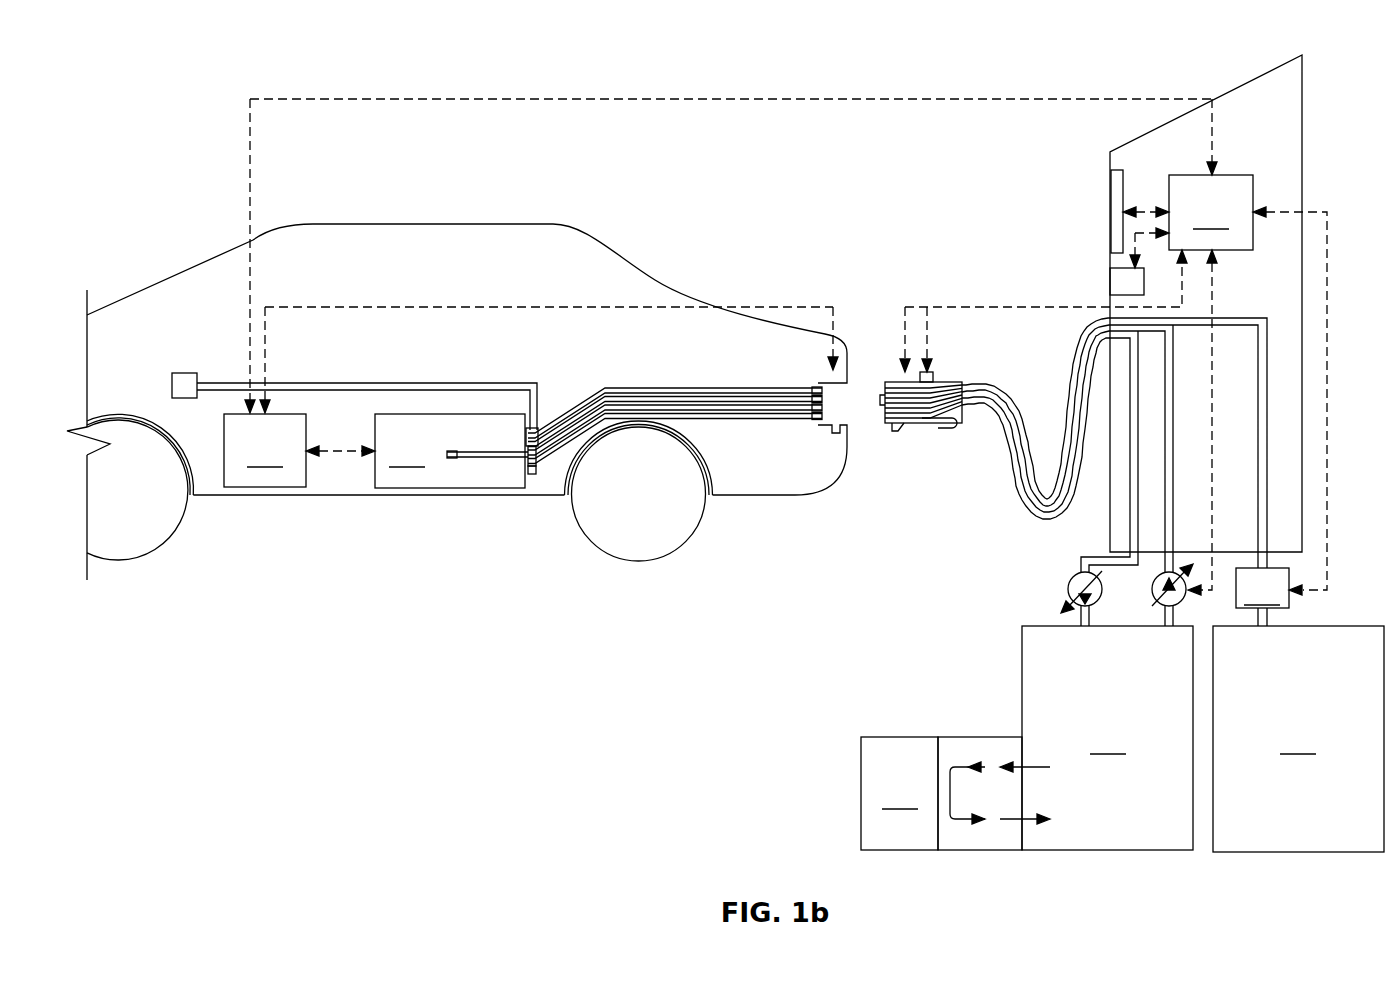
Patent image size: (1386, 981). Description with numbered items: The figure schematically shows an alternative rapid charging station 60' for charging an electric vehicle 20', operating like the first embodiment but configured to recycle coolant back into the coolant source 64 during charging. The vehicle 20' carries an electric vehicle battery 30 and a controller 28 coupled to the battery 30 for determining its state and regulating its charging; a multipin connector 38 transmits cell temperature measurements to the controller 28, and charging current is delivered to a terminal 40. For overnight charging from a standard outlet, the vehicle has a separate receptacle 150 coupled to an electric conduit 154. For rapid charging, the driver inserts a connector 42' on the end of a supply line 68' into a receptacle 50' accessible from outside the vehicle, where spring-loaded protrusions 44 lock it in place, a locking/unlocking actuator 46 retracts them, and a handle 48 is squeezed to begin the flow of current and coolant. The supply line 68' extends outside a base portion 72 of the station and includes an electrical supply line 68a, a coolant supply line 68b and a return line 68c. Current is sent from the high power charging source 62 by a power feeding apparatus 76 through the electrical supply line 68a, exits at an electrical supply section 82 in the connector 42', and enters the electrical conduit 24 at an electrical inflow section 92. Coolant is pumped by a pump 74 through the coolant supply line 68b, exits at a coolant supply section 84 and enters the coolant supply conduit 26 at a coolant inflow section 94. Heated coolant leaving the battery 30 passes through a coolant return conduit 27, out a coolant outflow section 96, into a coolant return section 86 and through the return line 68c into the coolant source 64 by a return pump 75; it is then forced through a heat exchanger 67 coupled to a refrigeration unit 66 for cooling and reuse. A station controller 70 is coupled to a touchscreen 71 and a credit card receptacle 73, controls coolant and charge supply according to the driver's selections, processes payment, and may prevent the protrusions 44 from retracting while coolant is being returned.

The electric vehicle 20' is at (457, 391).
The receptacle 150 is at (178, 372).
The electric conduit 154 is at (372, 383).
The negative terminal 40 is at (526, 432).
The multipin connector 38 is at (526, 440).
The electrical conduit 24 is at (620, 392).
The electrical inflow section 92 is at (821, 386).
The coolant inflow section 94 is at (811, 396).
The coolant outflow section 96 is at (812, 419).
The controller 28 is at (265, 450).
The electric vehicle battery 30 is at (415, 451).
The coolant supply conduit 26 is at (458, 459).
The coolant return conduit 27 is at (532, 472).
The receptacle 50' is at (864, 447).
The connector 42' is at (930, 461).
The electrical supply section 82 is at (918, 373).
The coolant supply section 84 is at (884, 398).
The protrusions 44 is at (903, 356).
The locking/unlocking actuator 46 is at (936, 374).
The coolant return section 86 is at (880, 428).
The handle 48 is at (946, 430).
The electrical supply line 68a is at (977, 384).
The coolant supply line 68b is at (1017, 437).
The return line 68c is at (1054, 518).
The supply line 68' is at (1091, 448).
The rapid charging station 60' is at (786, 311).
The base portion 72 is at (1302, 128).
The touchscreen 71 is at (1111, 213).
The controller 70 is at (1211, 212).
The credit card receptacle 73 is at (1111, 282).
The power feeding apparatus 76 is at (1262, 597).
The return pump 75 is at (1066, 592).
The pump 74 is at (1150, 593).
The coolant source 64 is at (1107, 738).
The high power charging source 62 is at (1298, 739).
The refrigeration unit 66 is at (899, 793).
The heat exchanger 67 is at (976, 737).